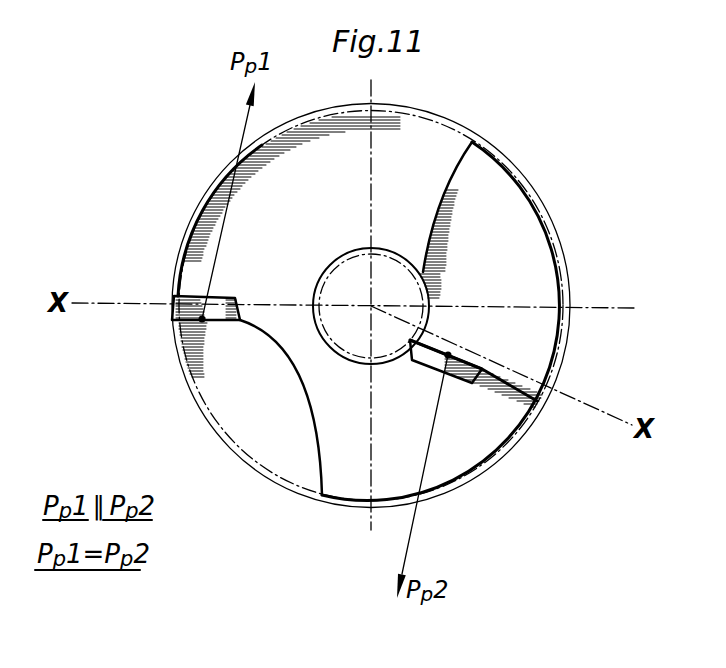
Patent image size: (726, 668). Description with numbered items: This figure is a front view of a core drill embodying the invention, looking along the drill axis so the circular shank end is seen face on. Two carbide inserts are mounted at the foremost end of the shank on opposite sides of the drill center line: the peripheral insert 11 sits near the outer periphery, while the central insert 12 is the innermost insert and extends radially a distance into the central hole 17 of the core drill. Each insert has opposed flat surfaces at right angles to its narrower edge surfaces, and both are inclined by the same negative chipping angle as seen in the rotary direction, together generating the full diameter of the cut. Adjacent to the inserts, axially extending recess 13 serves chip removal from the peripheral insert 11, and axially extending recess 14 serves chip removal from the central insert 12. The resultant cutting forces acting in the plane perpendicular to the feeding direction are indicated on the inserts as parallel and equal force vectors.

The peripheral insert 11 is at (237, 323).
The central insert 12 is at (432, 372).
The axially extending recess 13 is at (290, 360).
The axially extending recess 14 is at (441, 222).
The central hole 17 is at (350, 248).